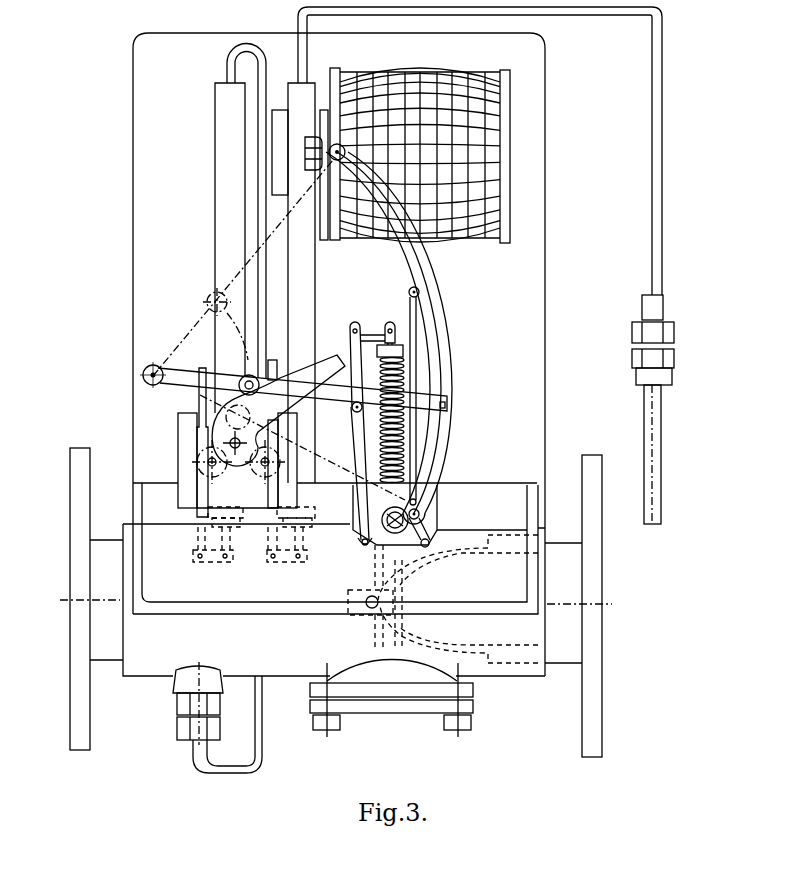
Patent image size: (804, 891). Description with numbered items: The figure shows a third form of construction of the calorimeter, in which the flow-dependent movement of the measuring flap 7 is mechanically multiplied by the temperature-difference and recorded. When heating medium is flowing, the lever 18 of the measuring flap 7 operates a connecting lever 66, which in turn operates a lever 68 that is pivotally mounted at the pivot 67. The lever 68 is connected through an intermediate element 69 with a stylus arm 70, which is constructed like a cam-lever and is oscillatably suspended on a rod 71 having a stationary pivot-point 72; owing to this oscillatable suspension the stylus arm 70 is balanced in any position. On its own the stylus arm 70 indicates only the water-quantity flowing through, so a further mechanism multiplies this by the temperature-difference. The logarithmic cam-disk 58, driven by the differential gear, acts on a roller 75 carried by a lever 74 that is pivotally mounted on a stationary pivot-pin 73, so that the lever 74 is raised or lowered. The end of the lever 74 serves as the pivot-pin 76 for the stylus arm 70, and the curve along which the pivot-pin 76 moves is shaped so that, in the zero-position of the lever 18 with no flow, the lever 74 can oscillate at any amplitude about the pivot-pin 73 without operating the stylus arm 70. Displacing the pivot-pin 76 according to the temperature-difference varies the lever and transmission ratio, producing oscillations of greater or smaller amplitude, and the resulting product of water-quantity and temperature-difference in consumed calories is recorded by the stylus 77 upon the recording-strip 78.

The measuring flap 7 is at (400, 577).
The lever 18 is at (395, 337).
The cam-disk 58 is at (278, 410).
The connecting lever 66 is at (369, 331).
The pivot 67 is at (354, 413).
The lever 68 is at (380, 452).
The intermediate element 69 is at (382, 546).
The stylus arm 70 is at (451, 380).
The rod 71 is at (415, 358).
The stationary pivot-point 72 is at (408, 291).
The pivot-pin 73 is at (143, 375).
The lever 74 is at (182, 385).
The roller 75 is at (256, 380).
The pivot-pin 76 is at (445, 405).
The stylus 77 is at (304, 151).
The recording-strip 78 is at (487, 165).